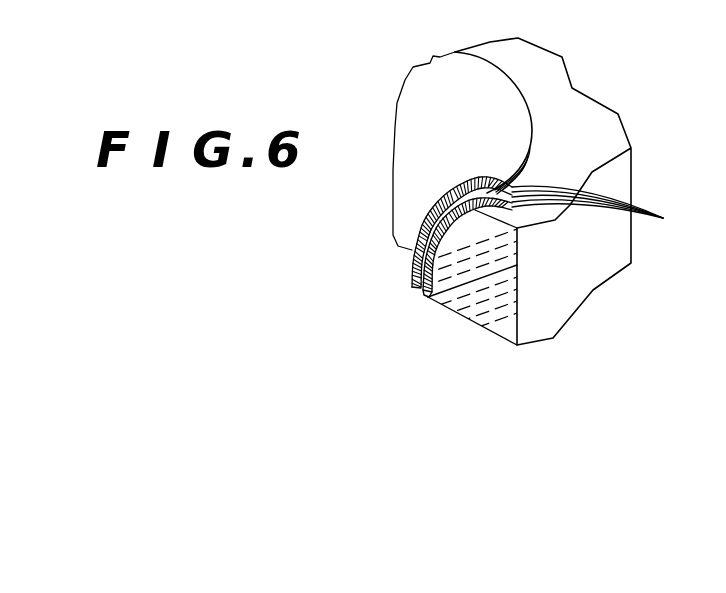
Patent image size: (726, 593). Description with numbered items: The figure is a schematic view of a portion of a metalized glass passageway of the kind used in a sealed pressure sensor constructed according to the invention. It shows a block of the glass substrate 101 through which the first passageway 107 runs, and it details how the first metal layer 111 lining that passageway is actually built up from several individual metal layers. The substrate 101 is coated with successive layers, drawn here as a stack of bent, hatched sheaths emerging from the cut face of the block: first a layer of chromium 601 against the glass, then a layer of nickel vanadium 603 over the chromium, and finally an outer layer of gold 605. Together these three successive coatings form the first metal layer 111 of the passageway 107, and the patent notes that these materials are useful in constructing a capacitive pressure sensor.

The substrate 101 is at (552, 82).
The first passageway 107 is at (395, 190).
The first metal layer 111 is at (656, 216).
The chromium layer 601 is at (427, 293).
The nickel vanadium layer 603 is at (425, 290).
The gold layer 605 is at (413, 284).